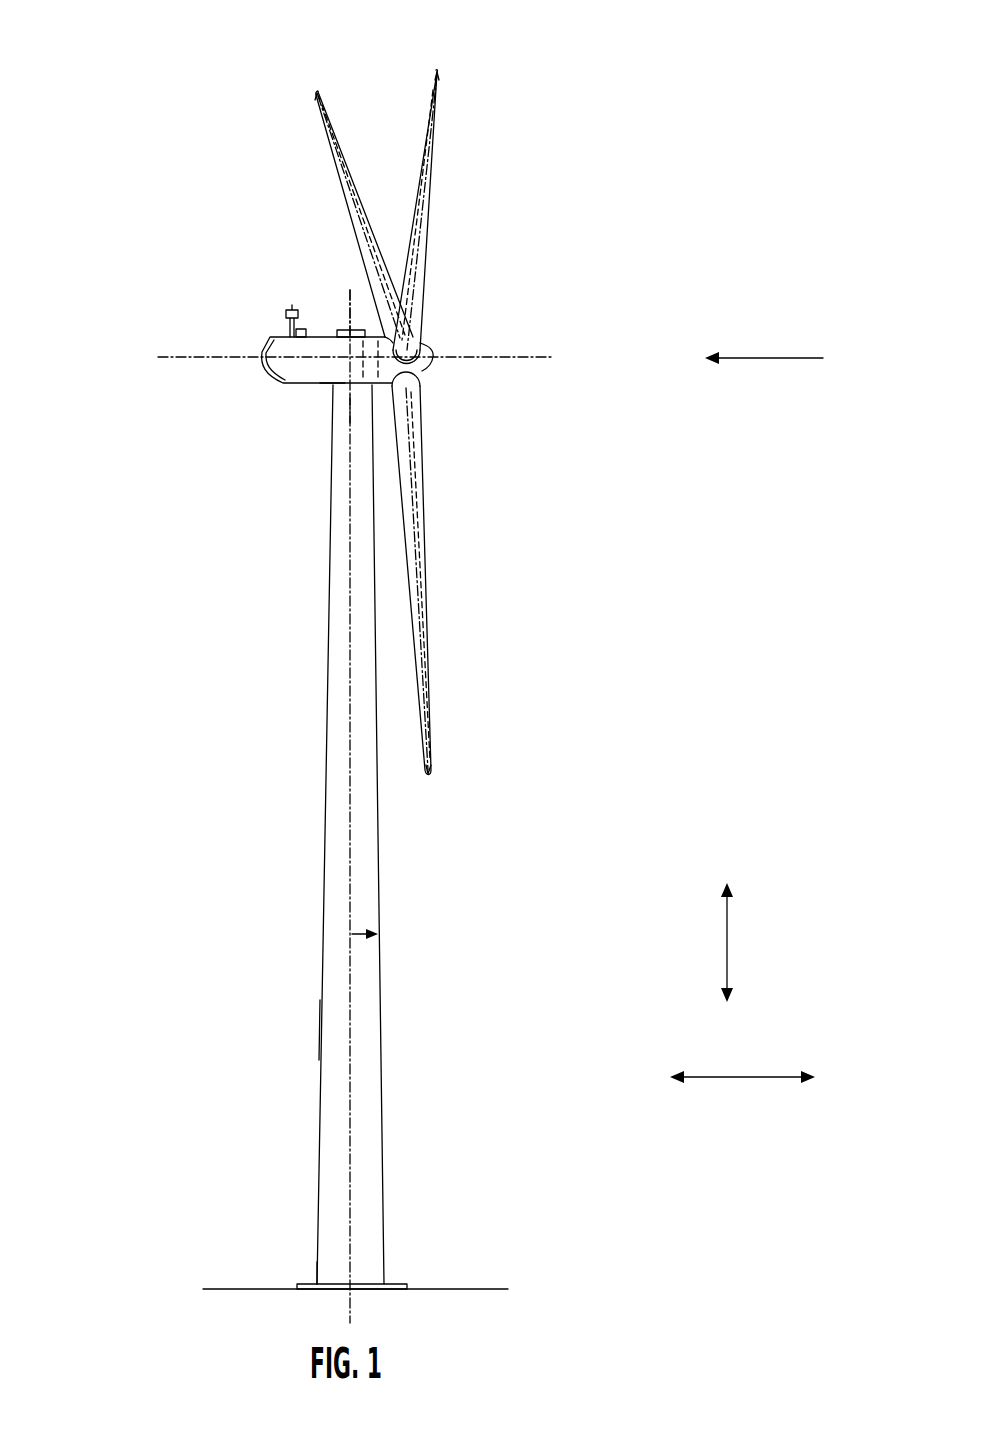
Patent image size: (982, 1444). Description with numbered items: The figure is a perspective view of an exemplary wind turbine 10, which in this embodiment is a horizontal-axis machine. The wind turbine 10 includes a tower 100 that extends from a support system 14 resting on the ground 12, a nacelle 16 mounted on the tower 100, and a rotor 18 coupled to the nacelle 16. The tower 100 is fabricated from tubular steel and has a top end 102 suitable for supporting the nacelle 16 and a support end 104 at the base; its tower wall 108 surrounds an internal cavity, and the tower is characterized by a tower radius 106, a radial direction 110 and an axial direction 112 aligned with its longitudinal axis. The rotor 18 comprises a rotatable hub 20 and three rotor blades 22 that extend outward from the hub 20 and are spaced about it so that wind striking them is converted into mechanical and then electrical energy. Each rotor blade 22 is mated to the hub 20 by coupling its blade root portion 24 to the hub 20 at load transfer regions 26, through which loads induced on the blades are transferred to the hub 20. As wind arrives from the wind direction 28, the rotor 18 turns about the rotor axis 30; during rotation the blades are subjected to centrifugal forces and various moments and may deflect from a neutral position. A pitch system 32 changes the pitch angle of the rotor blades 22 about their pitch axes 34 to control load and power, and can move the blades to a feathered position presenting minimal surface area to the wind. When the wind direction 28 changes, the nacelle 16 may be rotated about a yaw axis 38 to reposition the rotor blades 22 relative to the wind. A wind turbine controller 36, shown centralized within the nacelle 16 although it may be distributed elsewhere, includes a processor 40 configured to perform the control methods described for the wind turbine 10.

The wind turbine 10 is at (80, 114).
The ground 12 is at (222, 1289).
The support system 14 is at (315, 1284).
The nacelle 16 is at (298, 383).
The rotor 18 is at (401, 417).
The rotatable hub 20 is at (430, 348).
The rotor blades 22 is at (340, 178).
The blade root portion 24 is at (417, 478).
The load transfer regions 26 is at (418, 380).
The wind direction 28 is at (762, 358).
The rotor axis 30 is at (542, 360).
The pitch system 32 is at (387, 408).
The pitch axes 34 is at (315, 110).
The wind turbine controller 36 is at (350, 415).
The yaw axis 38 is at (352, 886).
The processor 40 is at (355, 288).
The tower 100 is at (337, 811).
The top end 102 is at (330, 390).
The support end 104 is at (375, 1280).
The tower radius 106 is at (352, 934).
The tower wall 108 is at (322, 1025).
The radial direction 110 is at (727, 955).
The axial direction 112 is at (730, 1077).